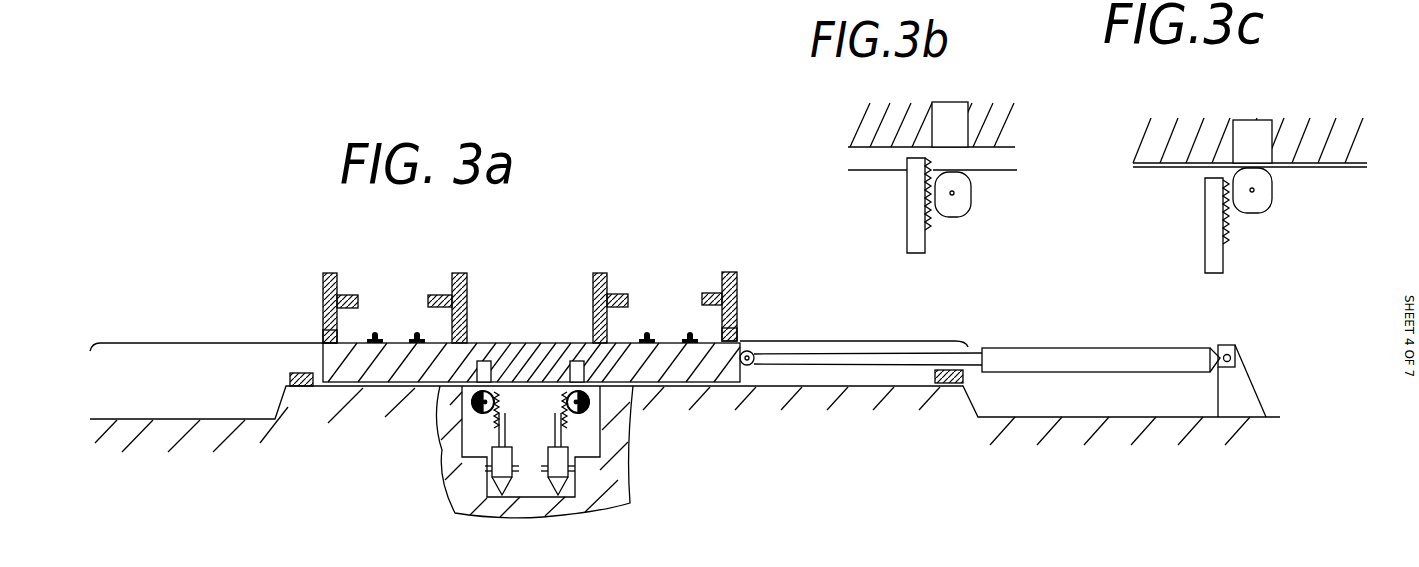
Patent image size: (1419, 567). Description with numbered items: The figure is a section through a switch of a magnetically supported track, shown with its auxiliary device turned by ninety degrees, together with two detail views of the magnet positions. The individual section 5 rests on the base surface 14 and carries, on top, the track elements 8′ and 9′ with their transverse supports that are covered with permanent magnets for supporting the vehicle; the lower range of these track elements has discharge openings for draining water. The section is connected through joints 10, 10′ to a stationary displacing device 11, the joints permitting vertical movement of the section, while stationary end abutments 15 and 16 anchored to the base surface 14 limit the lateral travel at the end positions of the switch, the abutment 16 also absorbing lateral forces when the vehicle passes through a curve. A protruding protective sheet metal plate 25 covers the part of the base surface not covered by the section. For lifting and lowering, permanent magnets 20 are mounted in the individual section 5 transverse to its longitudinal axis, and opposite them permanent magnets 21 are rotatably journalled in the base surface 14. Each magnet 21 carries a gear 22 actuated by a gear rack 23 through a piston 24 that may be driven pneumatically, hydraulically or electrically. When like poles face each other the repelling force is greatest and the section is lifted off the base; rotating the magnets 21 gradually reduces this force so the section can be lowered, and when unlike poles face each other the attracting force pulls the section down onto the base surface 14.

In FIG. 3a, the individual section 5 is at (396, 350).
In FIG. 3b, the individual section 5 is at (1003, 123).
In FIG. 3c, the individual section 5 is at (1347, 140).
In FIG. 3a, the track element 8′ is at (323, 300).
In FIG. 3a, the track element 9′ is at (596, 296).
In FIG. 3a, the joint 10 is at (748, 365).
In FIG. 3a, the joint 10′ is at (1232, 360).
In FIG. 3a, the stationary displacing device 11 is at (1055, 360).
In FIG. 3a, the base surface 14 is at (905, 386).
In FIG. 3a, the stationary end abutment 15 is at (290, 379).
In FIG. 3a, the stationary end abutment 16 is at (948, 386).
In FIG. 3a, the permanent magnet 20 is at (574, 362).
In FIG. 3b, the permanent magnet 20 is at (963, 103).
In FIG. 3c, the permanent magnet 20 is at (1267, 128).
In FIG. 3a, the permanent magnet 21 is at (482, 413).
In FIG. 3b, the permanent magnet 21 is at (958, 190).
In FIG. 3c, the permanent magnet 21 is at (1262, 190).
In FIG. 3a, the gear 22 is at (480, 414).
In FIG. 3b, the gear 22 is at (968, 200).
In FIG. 3c, the gear 22 is at (1277, 200).
In FIG. 3a, the gear rack 23 is at (557, 412).
In FIG. 3b, the gear rack 23 is at (913, 230).
In FIG. 3c, the gear rack 23 is at (1213, 247).
In FIG. 3a, the piston 24 is at (545, 472).
In FIG. 3a, the protective sheet metal plate 25 is at (194, 343).